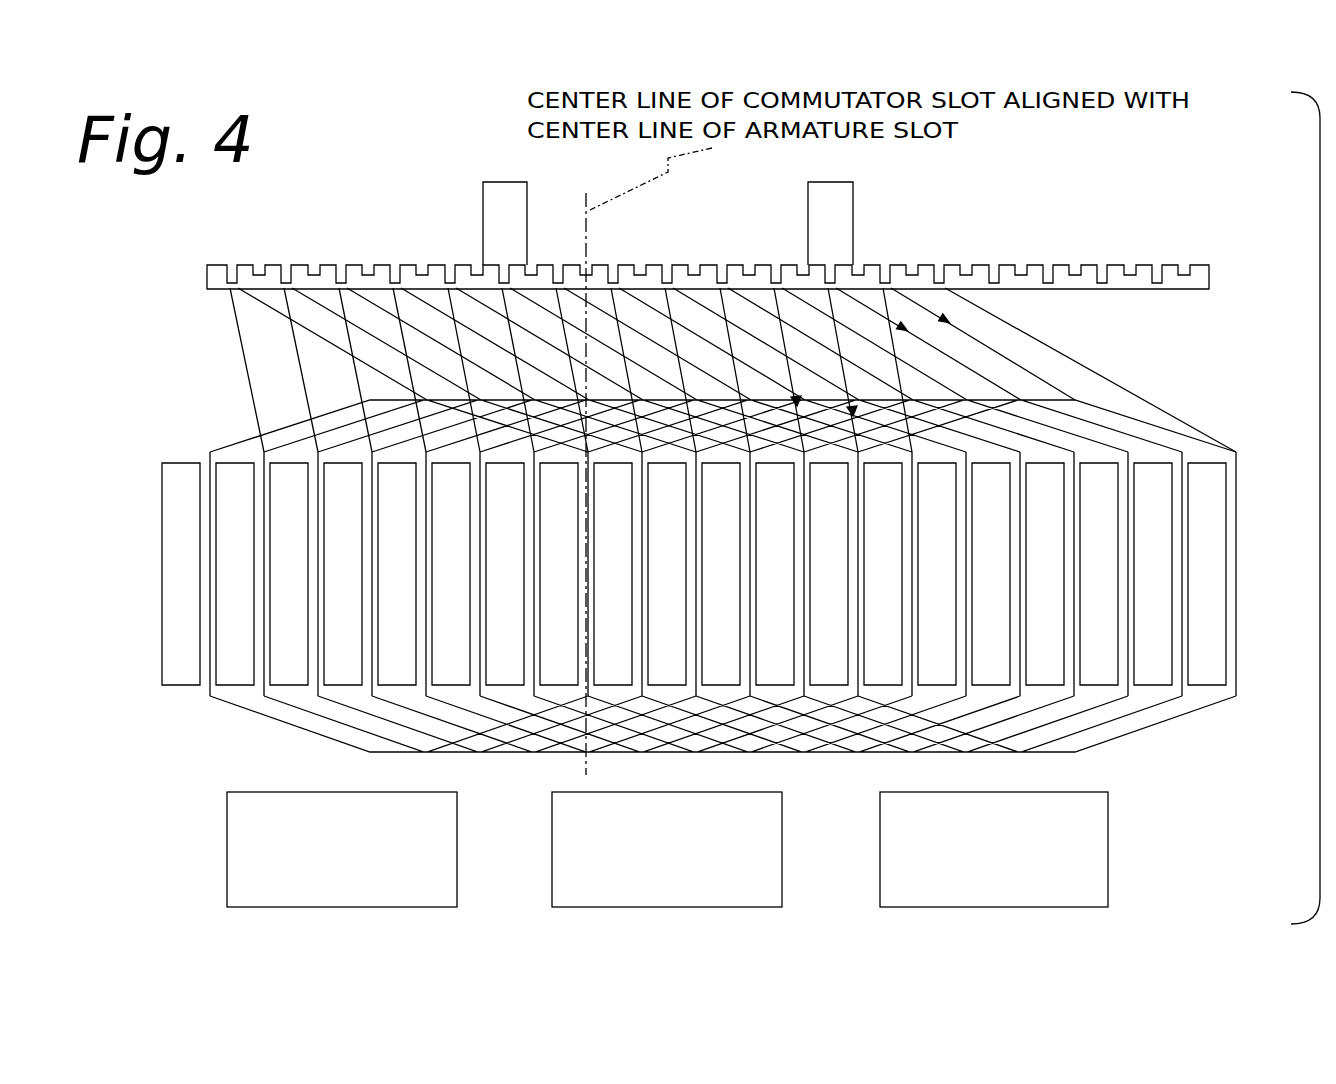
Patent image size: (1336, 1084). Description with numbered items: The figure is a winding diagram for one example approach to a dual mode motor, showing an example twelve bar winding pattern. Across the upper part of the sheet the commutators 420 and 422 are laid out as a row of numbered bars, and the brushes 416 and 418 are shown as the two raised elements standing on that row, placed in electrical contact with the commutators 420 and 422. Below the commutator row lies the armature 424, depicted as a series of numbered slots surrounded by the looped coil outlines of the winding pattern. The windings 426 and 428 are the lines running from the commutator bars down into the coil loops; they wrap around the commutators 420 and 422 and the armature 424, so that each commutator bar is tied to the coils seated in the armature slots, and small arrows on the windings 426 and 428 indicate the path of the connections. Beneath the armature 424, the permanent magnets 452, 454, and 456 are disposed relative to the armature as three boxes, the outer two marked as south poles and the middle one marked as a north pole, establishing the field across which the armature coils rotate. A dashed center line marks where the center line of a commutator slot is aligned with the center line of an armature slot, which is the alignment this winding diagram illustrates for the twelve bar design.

The brush 416 is at (490, 181).
The brush 418 is at (853, 198).
The commutator 420 is at (708, 217).
The commutator 422 is at (1071, 248).
The armature 424 is at (1250, 546).
The winding 426 is at (990, 369).
The winding 428 is at (990, 339).
The permanent magnet 452 is at (373, 866).
The permanent magnet 454 is at (706, 866).
The permanent magnet 456 is at (1038, 866).